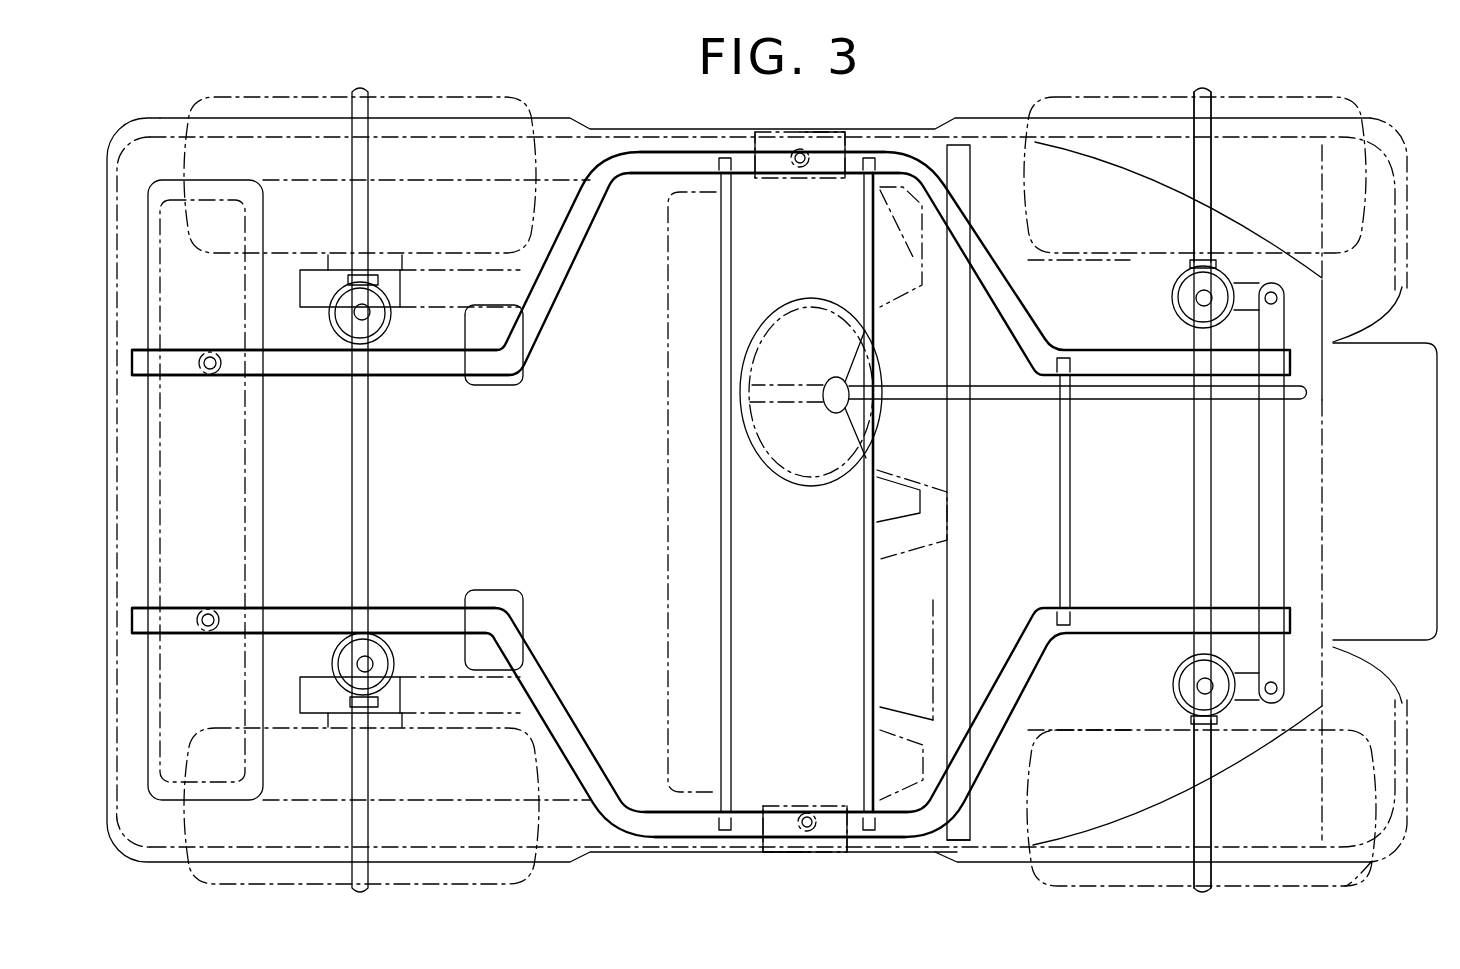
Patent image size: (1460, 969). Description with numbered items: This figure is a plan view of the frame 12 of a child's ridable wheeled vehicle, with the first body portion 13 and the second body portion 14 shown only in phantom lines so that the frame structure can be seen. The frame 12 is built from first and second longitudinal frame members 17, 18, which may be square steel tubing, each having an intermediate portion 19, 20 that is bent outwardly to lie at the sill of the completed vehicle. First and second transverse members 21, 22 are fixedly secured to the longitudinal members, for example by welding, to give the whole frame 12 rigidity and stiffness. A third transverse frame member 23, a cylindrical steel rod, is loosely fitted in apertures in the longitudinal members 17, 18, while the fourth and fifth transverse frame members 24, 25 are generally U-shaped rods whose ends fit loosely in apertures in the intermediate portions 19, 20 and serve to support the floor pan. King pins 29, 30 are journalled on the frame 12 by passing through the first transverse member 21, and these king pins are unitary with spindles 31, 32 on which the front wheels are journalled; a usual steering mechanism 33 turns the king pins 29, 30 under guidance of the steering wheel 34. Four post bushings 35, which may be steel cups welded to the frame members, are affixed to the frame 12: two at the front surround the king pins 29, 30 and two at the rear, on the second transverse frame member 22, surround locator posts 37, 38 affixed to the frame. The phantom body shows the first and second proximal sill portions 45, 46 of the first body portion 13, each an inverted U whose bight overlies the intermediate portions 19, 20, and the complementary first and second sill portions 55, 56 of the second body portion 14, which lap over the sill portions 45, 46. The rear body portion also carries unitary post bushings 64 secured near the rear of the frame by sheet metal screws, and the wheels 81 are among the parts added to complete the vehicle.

The frame 12 is at (560, 257).
The first body portion 13 is at (950, 860).
The second body portion 14 is at (600, 856).
The first longitudinal frame member 17 is at (424, 368).
The second longitudinal frame member 18 is at (410, 608).
The intermediate portion 19 is at (655, 160).
The intermediate portion 20 is at (660, 818).
The first transverse member 21 is at (1200, 448).
The second transverse member 22 is at (370, 529).
The third transverse frame member 23 is at (1066, 524).
The fourth transverse frame member 24 is at (865, 547).
The fifth transverse frame member 25 is at (722, 549).
The king pin 29 is at (1200, 301).
The king pin 30 is at (1200, 689).
The spindle 31 is at (1200, 219).
The spindle 32 is at (1200, 831).
The steering mechanism 33 is at (1272, 508).
The steering wheel 34 is at (810, 300).
The post bushing 35 is at (391, 313).
The locator post 37 is at (353, 315).
The locator post 38 is at (356, 665).
The first proximal sill portion 45 is at (757, 162).
The second proximal sill portion 46 is at (762, 822).
The first sill portion 55 is at (812, 140).
The second sill portion 56 is at (812, 855).
The post bushing 64 is at (210, 374).
The wheels 81 is at (1378, 810).